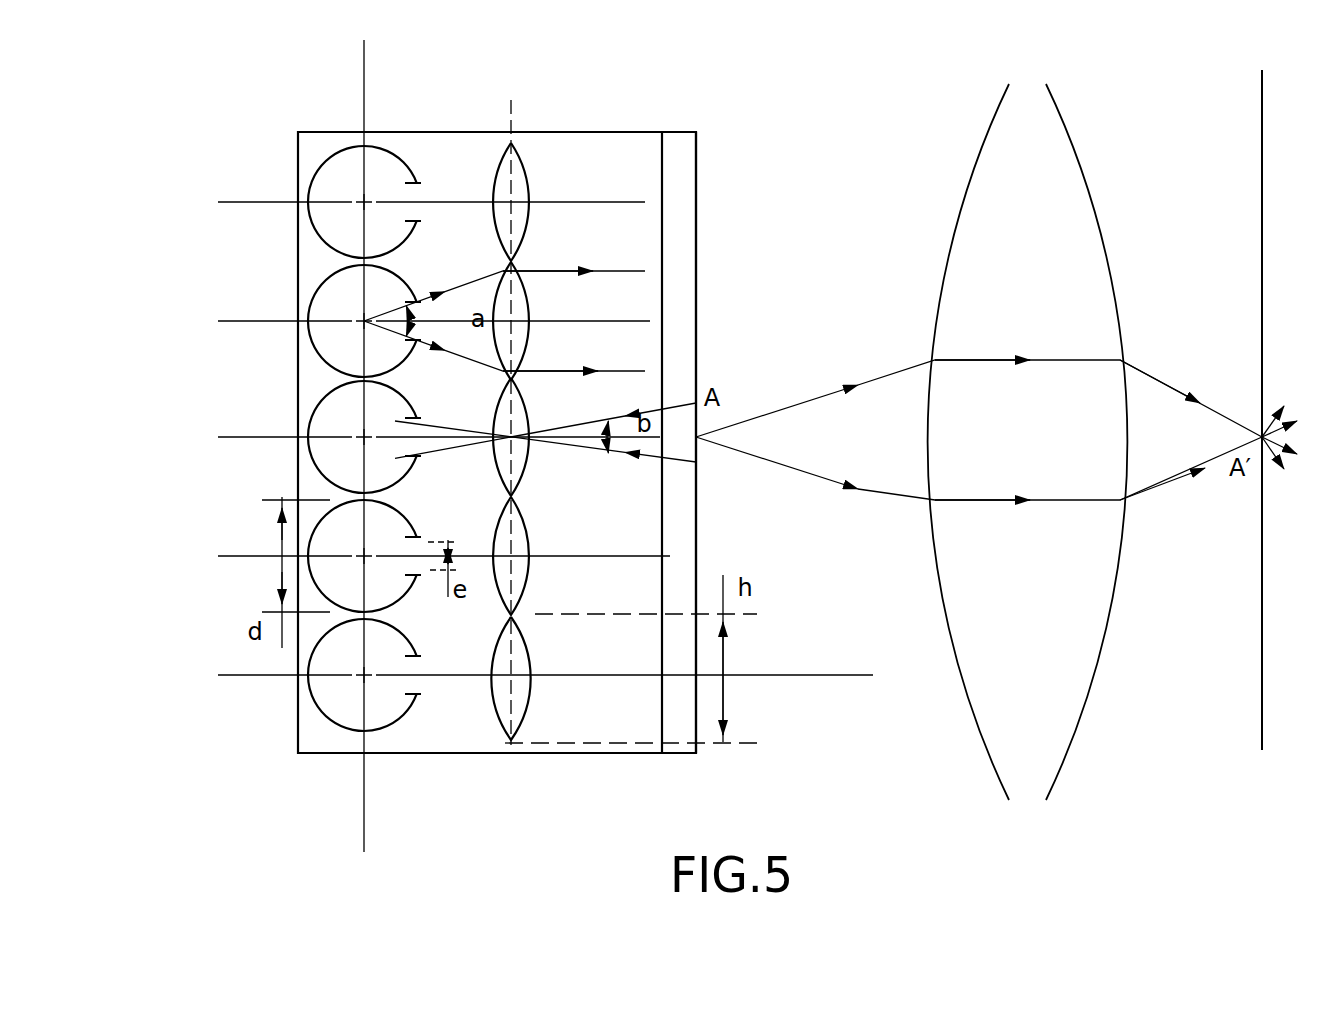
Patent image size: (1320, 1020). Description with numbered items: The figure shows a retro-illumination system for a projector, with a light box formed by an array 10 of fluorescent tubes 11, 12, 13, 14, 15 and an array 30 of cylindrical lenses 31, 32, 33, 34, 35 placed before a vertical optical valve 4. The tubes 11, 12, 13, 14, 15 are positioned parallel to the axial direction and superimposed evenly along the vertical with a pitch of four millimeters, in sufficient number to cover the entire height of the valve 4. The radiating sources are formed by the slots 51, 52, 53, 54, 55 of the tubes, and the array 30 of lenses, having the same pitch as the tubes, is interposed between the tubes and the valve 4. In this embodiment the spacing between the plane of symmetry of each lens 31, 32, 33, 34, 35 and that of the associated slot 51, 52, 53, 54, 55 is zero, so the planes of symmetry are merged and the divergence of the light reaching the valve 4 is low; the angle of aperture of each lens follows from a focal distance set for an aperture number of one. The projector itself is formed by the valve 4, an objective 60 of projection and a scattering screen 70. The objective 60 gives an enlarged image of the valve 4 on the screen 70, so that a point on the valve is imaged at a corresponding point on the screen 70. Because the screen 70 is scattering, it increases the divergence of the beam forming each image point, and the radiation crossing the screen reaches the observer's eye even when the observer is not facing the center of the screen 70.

The optical valve 4 is at (681, 148).
The array of tubes 10 is at (222, 137).
The fluorescent tube 11 is at (333, 204).
The fluorescent tube 12 is at (338, 321).
The fluorescent tube 13 is at (333, 436).
The fluorescent tube 14 is at (333, 555).
The fluorescent tube 15 is at (333, 680).
The array of lenses 30 is at (527, 153).
The lens 31 is at (525, 178).
The lens 32 is at (525, 305).
The lens 33 is at (525, 405).
The lens 34 is at (525, 525).
The lens 35 is at (525, 645).
The slot 51 is at (421, 183).
The slot 52 is at (421, 302).
The slot 53 is at (421, 418).
The slot 54 is at (421, 537).
The slot 55 is at (421, 656).
The objective of projection 60 is at (1083, 627).
The scattering screen 70 is at (1262, 675).